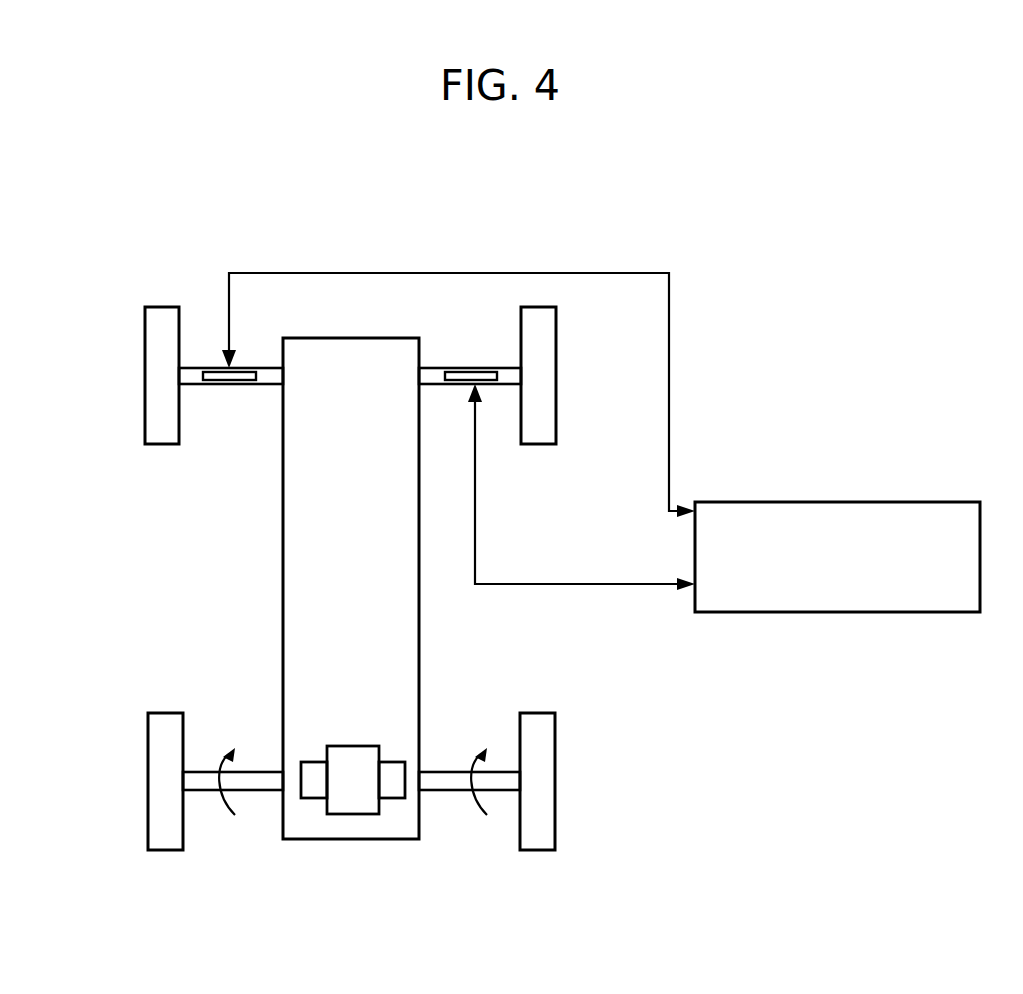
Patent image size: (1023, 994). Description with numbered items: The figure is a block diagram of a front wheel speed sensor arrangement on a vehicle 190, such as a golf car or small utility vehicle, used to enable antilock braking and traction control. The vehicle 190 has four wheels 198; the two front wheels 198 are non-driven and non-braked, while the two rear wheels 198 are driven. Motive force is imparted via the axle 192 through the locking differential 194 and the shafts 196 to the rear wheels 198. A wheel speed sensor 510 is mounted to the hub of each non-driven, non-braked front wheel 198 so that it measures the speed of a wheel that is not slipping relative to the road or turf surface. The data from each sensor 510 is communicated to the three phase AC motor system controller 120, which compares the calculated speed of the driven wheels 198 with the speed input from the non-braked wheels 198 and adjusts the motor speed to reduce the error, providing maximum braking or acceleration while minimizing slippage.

The motor controller 120 is at (855, 502).
The vehicle 190 is at (88, 574).
The axle 192 is at (276, 665).
The locking differential 194 is at (353, 832).
The shafts 196 is at (210, 772).
The wheels 198 is at (143, 423).
The front wheel speed sensor 510 is at (238, 381).